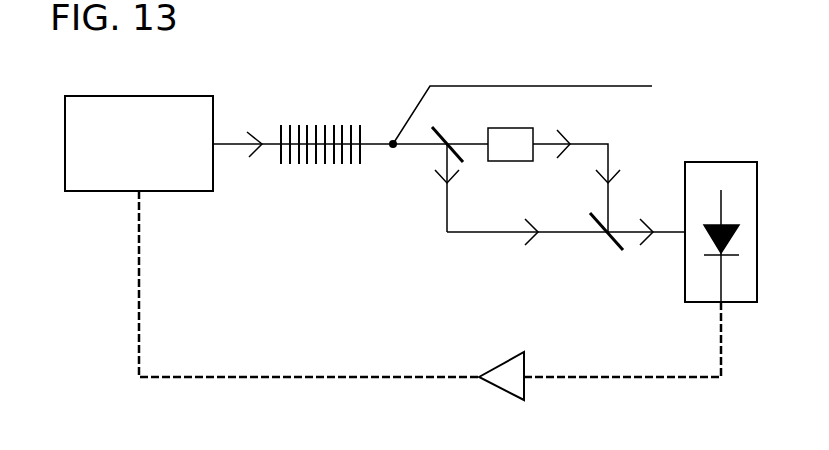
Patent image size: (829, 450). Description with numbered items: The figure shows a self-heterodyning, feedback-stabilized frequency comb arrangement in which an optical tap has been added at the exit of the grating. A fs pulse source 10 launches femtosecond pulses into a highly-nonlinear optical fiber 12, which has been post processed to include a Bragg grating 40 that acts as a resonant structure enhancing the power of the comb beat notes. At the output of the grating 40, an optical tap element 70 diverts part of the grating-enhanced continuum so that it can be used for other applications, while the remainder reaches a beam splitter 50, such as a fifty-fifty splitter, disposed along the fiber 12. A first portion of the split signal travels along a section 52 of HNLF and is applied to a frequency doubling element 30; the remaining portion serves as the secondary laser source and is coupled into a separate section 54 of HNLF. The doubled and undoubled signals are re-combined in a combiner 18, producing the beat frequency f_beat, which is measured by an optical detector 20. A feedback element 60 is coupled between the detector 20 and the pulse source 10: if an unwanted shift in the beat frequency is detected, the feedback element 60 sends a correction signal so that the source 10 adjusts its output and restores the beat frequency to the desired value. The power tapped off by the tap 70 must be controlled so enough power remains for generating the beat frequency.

The fs-pulse laser source 10 is at (138, 96).
The highly-nonlinear optical fiber 12 is at (245, 146).
The Bragg grating 40 is at (321, 124).
The optical tap element 70 is at (393, 149).
The beam splitter 50 is at (441, 130).
The frequency doubling element 30 is at (510, 128).
The section of HNLF 52 is at (472, 146).
The separate section of HNLF 54 is at (500, 234).
The combiner 18 is at (612, 254).
The optical detector 20 is at (721, 162).
The feedback element 60 is at (510, 383).